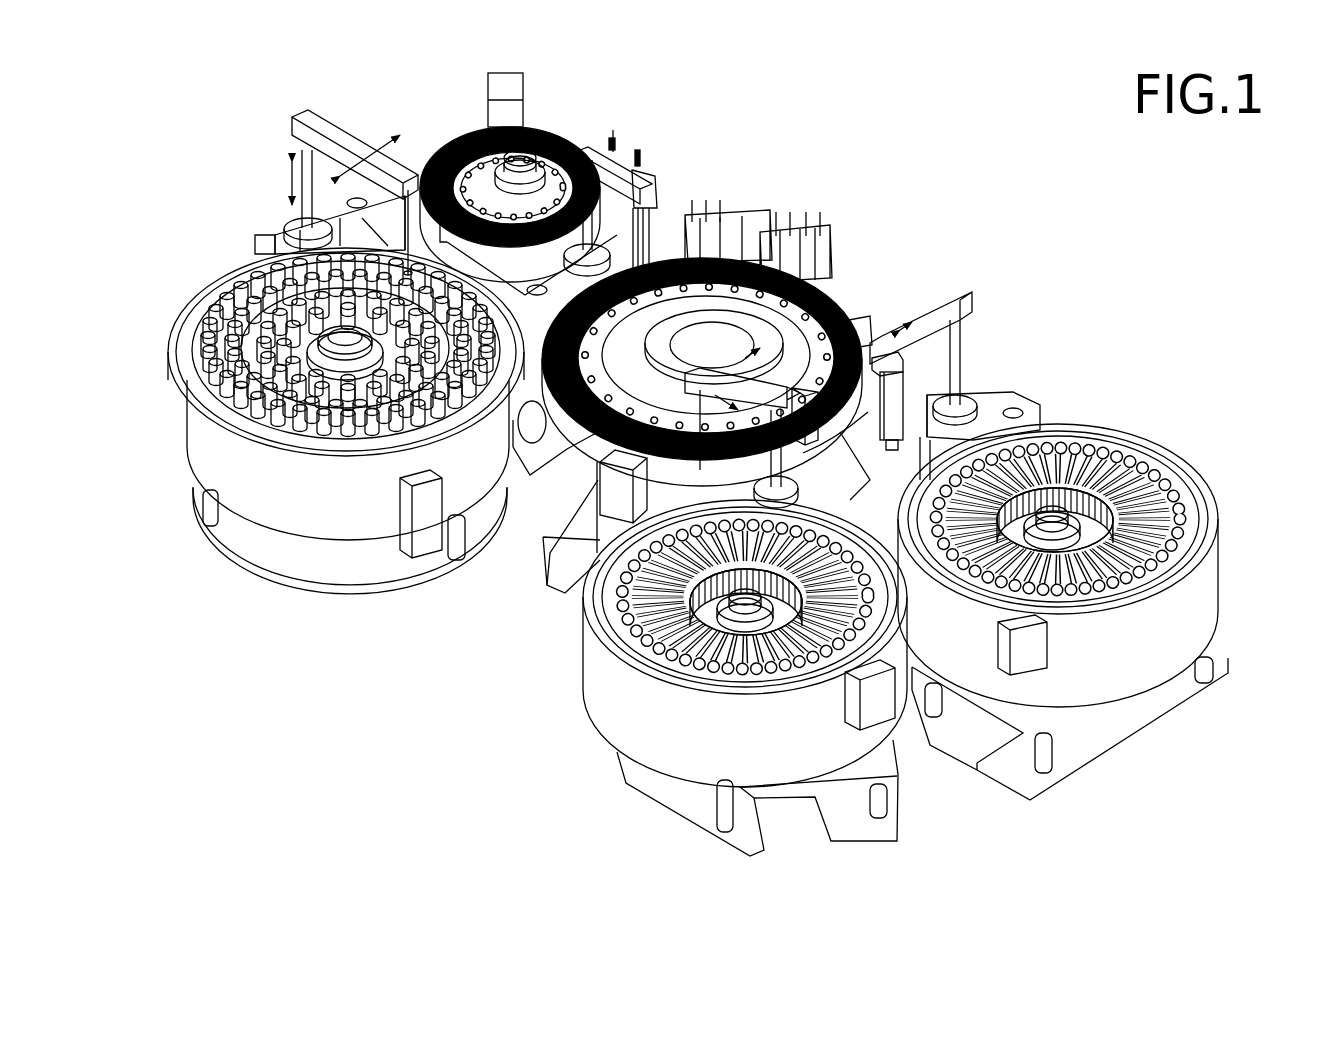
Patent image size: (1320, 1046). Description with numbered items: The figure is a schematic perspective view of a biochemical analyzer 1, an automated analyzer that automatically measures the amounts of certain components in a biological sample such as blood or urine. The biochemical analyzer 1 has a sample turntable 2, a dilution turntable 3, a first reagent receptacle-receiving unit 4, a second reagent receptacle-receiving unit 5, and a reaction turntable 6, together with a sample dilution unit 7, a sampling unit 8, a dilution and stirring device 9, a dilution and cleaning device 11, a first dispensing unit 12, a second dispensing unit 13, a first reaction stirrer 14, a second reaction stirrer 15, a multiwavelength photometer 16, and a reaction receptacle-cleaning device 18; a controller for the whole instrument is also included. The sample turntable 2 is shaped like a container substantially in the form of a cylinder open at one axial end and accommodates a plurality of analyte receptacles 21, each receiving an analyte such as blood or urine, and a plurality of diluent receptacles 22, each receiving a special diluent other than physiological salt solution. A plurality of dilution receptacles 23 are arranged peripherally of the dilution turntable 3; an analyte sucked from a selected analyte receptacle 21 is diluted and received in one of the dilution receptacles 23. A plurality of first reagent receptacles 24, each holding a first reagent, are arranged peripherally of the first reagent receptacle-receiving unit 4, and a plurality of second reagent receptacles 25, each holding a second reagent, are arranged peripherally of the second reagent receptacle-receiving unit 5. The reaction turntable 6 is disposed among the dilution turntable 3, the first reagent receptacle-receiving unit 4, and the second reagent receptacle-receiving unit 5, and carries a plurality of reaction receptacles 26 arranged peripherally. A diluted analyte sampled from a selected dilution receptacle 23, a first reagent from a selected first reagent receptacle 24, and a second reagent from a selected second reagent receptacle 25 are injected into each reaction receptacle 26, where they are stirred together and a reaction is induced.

The biochemical analyzer 1 is at (937, 178).
The sample turntable 2 is at (195, 425).
The dilution turntable 3 is at (450, 140).
The first reagent receptacle-receiving unit 4 is at (600, 695).
The second reagent receptacle-receiving unit 5 is at (1200, 580).
The reaction turntable 6 is at (822, 278).
The sample dilution unit 7 is at (285, 111).
The sampling unit 8 is at (700, 118).
The dilution and stirring device 9 is at (524, 87).
The dilution and cleaning device 11 is at (620, 145).
The first dispensing unit 12 is at (755, 372).
The second dispensing unit 13 is at (1030, 275).
The first reaction stirrer 14 is at (866, 479).
The second reaction stirrer 15 is at (910, 302).
The multiwavelength photometer 16 is at (612, 492).
The reaction receptacle-cleaning device 18 is at (735, 215).
The analyte receptacles 21 is at (215, 305).
The diluent receptacles 22 is at (265, 335).
The dilution receptacles 23 is at (572, 137).
The first reagent receptacles 24 is at (660, 655).
The second reagent receptacles 25 is at (1150, 436).
The reaction receptacles 26 is at (860, 317).